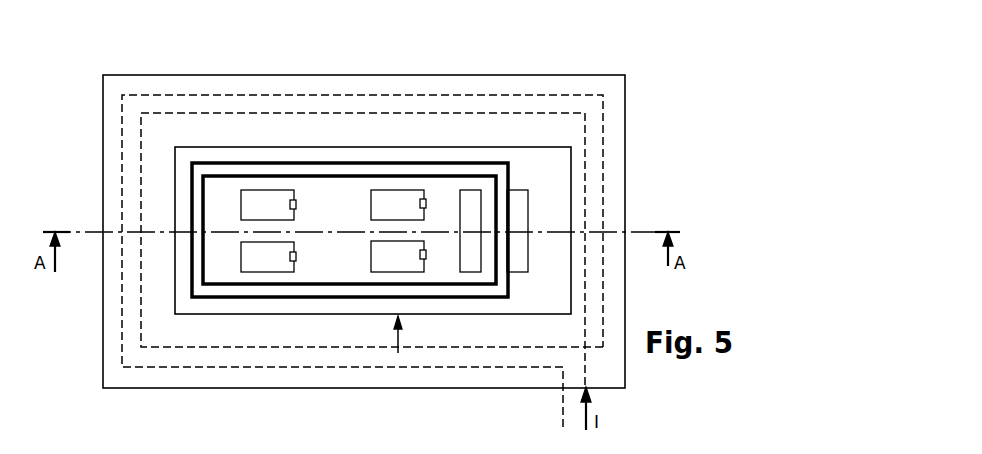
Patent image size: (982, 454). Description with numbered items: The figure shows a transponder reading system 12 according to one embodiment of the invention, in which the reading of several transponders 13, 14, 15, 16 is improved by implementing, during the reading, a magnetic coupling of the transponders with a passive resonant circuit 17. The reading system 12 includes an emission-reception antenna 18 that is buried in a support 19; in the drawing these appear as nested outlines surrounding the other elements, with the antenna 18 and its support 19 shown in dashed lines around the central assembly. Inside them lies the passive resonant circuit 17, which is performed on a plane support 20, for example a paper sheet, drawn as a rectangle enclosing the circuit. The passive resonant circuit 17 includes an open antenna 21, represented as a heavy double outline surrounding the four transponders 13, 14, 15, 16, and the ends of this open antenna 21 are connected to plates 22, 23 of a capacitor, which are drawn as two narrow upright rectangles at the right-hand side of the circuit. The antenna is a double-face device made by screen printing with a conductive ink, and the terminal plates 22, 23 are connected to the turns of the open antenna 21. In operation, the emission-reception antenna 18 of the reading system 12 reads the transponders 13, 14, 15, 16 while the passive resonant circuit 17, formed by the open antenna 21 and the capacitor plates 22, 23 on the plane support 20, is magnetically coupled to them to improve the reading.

The reading system 12 is at (632, 68).
The transponder 13 is at (293, 212).
The transponder 14 is at (371, 196).
The transponder 15 is at (293, 264).
The transponder 16 is at (371, 247).
The passive resonant circuit 17 is at (398, 353).
The emission-reception antenna 18 is at (122, 302).
The support 19 is at (112, 352).
The plane support 20 is at (555, 159).
The open antenna 21 is at (463, 163).
The plate 22 is at (523, 243).
The plate 23 is at (462, 237).